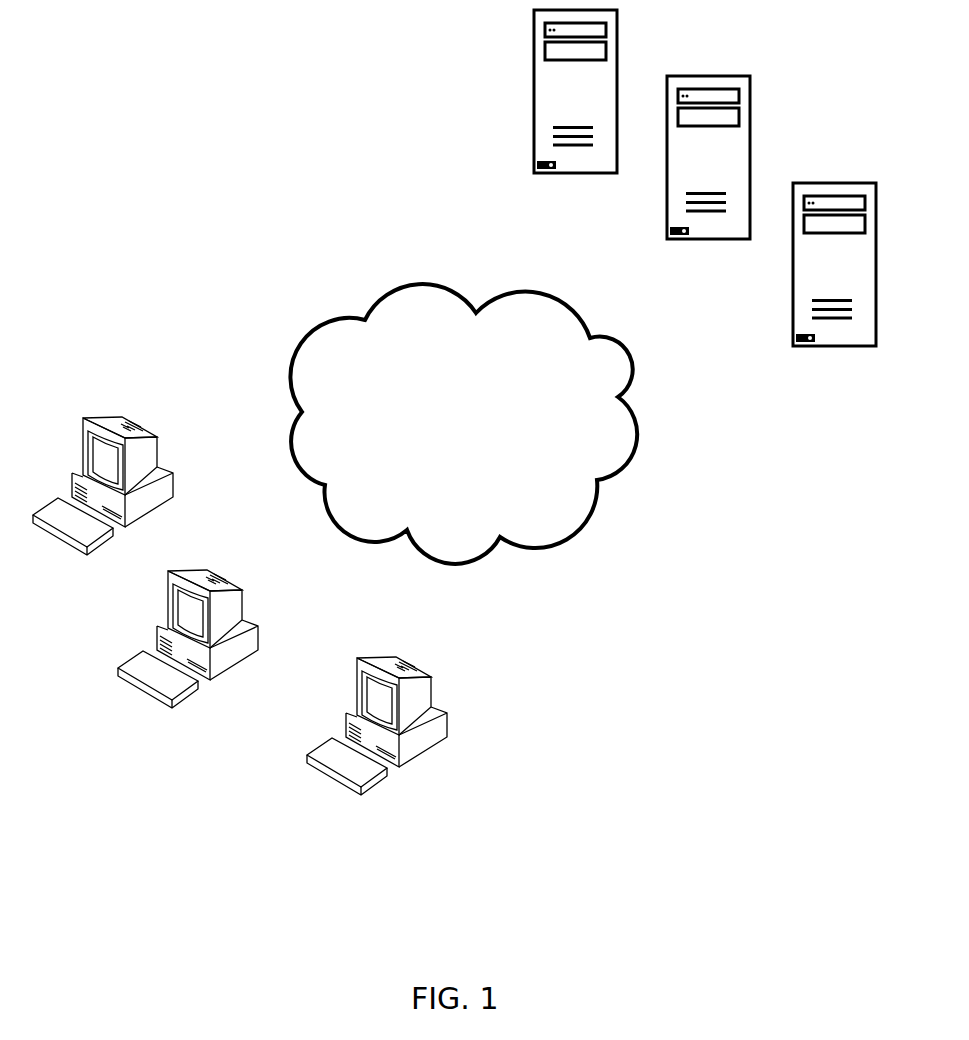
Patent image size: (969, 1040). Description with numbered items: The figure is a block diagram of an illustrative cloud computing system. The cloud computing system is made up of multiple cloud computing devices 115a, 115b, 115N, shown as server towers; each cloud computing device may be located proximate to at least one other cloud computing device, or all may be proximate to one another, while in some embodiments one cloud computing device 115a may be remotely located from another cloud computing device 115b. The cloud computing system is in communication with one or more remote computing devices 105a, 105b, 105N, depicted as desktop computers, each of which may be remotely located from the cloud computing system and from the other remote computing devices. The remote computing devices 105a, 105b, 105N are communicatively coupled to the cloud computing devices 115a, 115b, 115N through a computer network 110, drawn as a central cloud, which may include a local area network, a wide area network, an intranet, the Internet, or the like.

The remote computing device 105a is at (293, 458).
The remote computing device 105b is at (347, 535).
The remote computing device 105N is at (438, 565).
The computer network 110 is at (478, 431).
The cloud computing device 115a is at (537, 288).
The cloud computing device 115b is at (617, 350).
The cloud computing device 115N is at (636, 440).